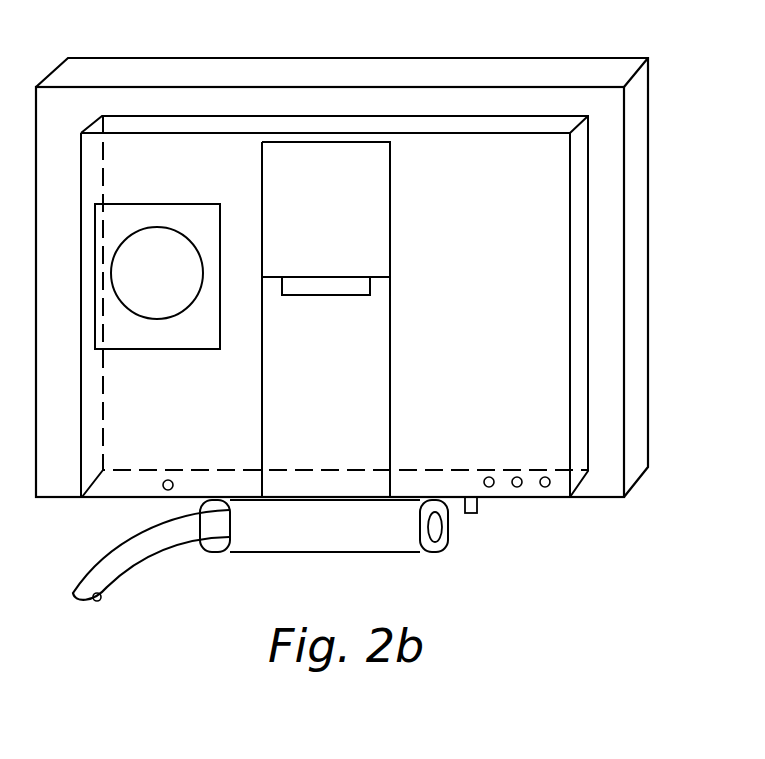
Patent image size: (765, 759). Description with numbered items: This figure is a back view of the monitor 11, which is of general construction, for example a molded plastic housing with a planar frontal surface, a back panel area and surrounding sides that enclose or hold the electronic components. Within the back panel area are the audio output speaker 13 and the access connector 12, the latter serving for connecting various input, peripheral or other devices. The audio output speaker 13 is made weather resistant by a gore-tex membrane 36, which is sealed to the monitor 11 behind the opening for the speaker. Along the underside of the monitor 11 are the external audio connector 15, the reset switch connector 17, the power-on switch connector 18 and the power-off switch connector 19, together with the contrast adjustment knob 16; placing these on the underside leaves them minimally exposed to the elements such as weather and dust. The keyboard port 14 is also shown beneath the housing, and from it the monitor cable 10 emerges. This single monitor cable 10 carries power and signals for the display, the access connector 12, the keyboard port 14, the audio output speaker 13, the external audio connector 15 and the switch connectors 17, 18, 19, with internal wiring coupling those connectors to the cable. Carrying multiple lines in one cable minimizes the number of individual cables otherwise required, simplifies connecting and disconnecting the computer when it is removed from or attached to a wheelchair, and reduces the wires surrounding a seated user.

The monitor cable 10 is at (133, 563).
The monitor 11 is at (658, 138).
The access connector 12 is at (327, 297).
The audio output speaker 13 is at (148, 203).
The keyboard port 14 is at (449, 540).
The external audio connector 15 is at (168, 479).
The contrast adjustment knob 16 is at (477, 514).
The reset switch connector 17 is at (487, 477).
The power-on switch connector 18 is at (517, 477).
The power-off switch connector 19 is at (545, 477).
The gore-tex membrane 36 is at (186, 250).